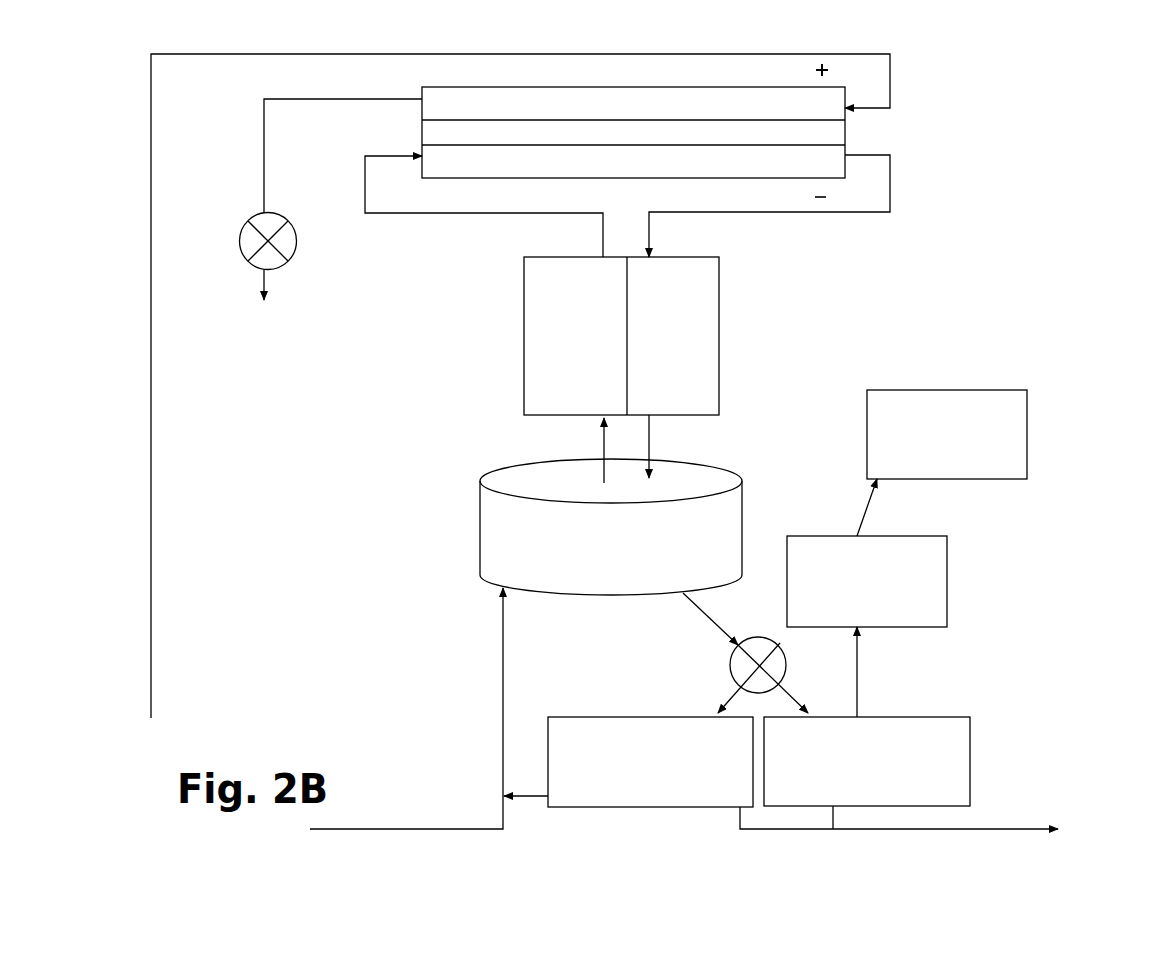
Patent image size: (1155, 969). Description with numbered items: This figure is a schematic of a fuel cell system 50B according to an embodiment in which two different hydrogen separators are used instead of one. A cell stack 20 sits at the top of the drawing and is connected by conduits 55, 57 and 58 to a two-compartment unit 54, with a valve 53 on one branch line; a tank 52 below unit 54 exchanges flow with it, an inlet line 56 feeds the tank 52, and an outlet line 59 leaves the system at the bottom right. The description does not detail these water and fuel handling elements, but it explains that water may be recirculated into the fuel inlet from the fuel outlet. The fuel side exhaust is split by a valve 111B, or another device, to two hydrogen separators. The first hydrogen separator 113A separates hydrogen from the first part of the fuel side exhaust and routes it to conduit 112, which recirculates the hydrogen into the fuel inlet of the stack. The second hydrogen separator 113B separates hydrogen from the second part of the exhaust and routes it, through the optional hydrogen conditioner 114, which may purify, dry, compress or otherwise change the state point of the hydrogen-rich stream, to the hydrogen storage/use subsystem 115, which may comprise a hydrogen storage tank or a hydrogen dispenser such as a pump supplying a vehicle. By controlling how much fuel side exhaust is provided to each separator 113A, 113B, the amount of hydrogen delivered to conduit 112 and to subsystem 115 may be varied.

The electrolytic cell 20 is at (810, 131).
The hydrogen generation system 50B is at (970, 322).
The electrolyte tank 52 is at (683, 525).
The valve 53 is at (299, 233).
The two-compartment reservoir 54 is at (662, 322).
The conduit 55 is at (151, 492).
The inlet line 56 is at (435, 829).
The conduit 57 is at (445, 213).
The conduit 58 is at (892, 188).
The outlet line 59 is at (1005, 829).
The valve 111B is at (728, 660).
The conduit 112 is at (523, 796).
The first hydrogen separator 113A is at (637, 715).
The second hydrogen separator 113B is at (912, 717).
The hydrogen conditioner 114 is at (947, 590).
The hydrogen storage/use subsystem 115 is at (1015, 479).